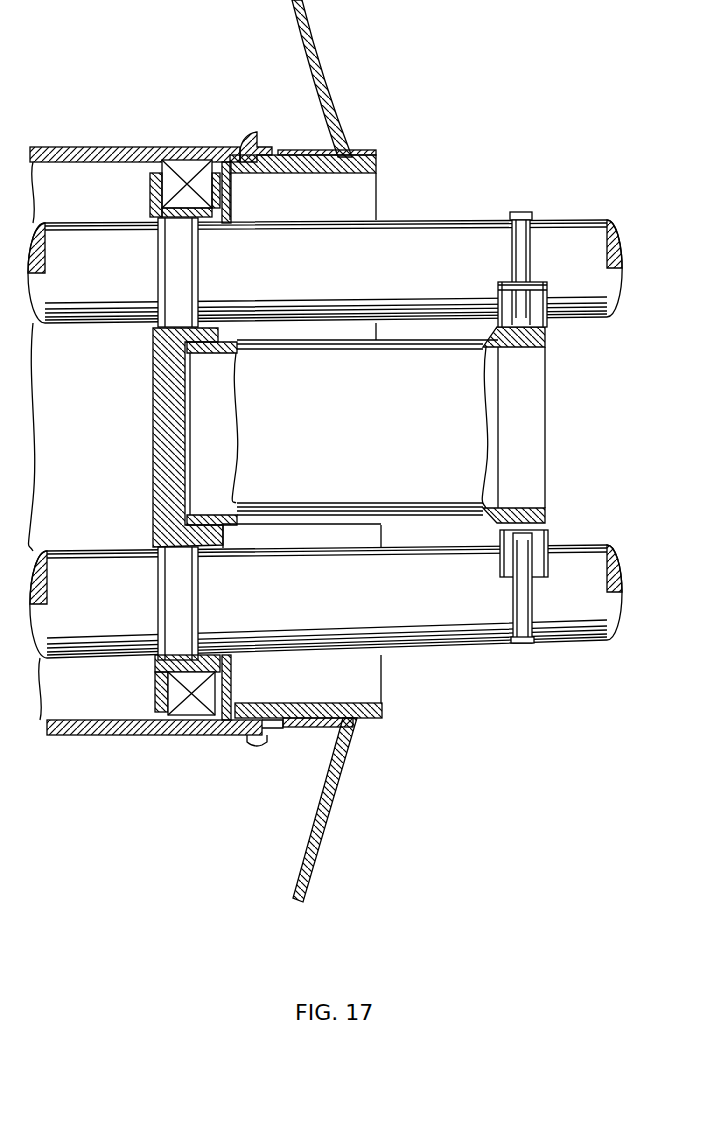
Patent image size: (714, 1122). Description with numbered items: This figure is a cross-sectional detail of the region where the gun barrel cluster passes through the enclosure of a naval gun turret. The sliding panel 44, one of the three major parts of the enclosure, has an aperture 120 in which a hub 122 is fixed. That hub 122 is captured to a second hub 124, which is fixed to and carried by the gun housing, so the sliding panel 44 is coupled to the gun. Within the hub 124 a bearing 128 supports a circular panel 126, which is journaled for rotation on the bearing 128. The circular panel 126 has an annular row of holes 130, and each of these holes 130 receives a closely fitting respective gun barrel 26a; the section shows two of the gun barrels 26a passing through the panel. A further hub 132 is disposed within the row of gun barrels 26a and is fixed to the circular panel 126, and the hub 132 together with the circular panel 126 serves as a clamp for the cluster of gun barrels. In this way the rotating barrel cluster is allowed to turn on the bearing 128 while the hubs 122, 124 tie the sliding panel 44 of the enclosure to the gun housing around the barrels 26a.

The gun barrel 26a is at (572, 220).
The sliding panel 44 is at (325, 60).
The aperture 120 is at (353, 157).
The hub 122 is at (377, 162).
The hub 124 is at (137, 147).
The circular panel 126 is at (153, 388).
The bearing 128 is at (197, 160).
The holes 130 is at (230, 680).
The hub 132 is at (547, 515).